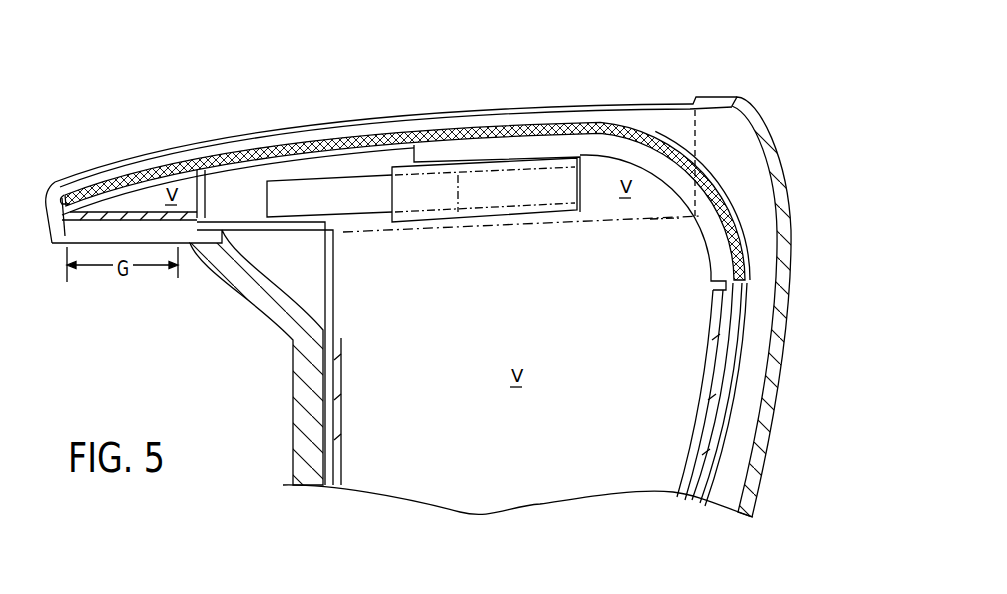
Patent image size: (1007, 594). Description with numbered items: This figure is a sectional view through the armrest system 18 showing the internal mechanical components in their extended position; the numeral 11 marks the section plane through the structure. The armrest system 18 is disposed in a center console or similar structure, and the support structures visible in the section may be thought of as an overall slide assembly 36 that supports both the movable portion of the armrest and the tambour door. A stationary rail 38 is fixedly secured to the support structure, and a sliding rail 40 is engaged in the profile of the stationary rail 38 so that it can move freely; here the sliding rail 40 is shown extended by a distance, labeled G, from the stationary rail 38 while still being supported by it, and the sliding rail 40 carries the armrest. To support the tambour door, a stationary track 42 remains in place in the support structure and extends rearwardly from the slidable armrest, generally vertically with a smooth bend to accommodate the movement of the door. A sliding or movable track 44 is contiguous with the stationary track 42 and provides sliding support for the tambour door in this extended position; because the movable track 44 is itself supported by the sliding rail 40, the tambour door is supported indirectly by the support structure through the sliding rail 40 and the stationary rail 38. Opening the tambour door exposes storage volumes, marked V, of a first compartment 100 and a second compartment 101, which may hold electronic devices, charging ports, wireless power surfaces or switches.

The section line 11- 11 is at (628, 96).
The armrest system 18 is at (156, 130).
The slide assembly 36 is at (727, 190).
The stationary rail 38 is at (514, 216).
The sliding rail 40 is at (340, 224).
The stationary track 42 is at (723, 320).
The sliding or movable track 44 is at (433, 128).
The first compartment 100 is at (207, 187).
The second compartment 101 is at (662, 218).